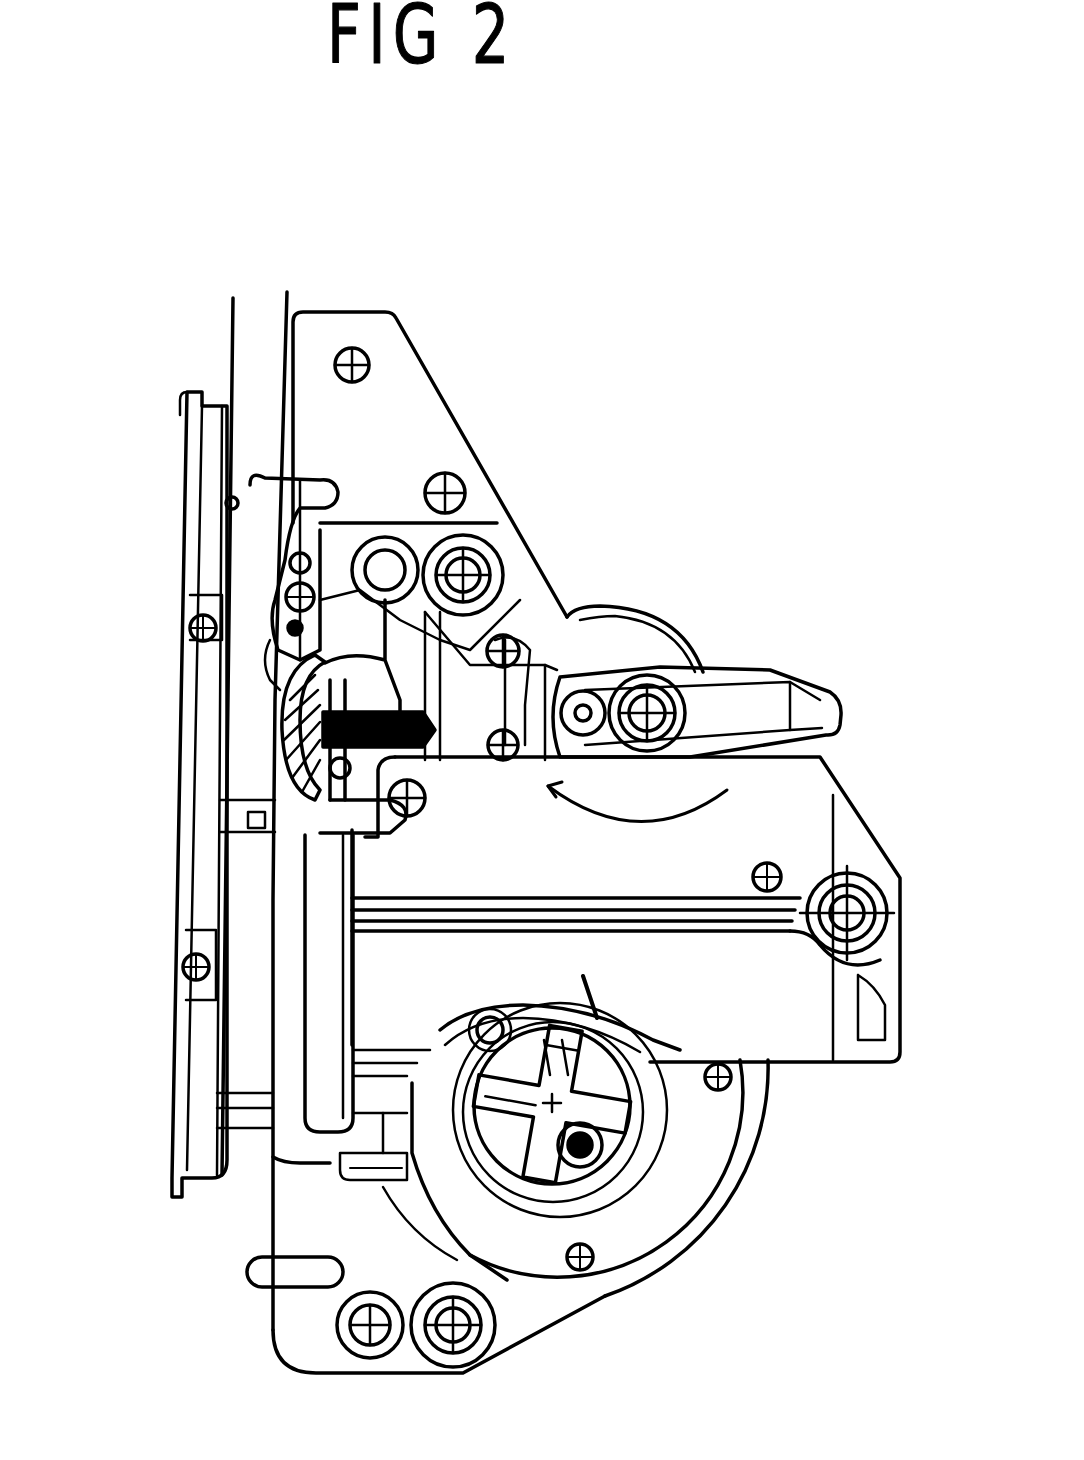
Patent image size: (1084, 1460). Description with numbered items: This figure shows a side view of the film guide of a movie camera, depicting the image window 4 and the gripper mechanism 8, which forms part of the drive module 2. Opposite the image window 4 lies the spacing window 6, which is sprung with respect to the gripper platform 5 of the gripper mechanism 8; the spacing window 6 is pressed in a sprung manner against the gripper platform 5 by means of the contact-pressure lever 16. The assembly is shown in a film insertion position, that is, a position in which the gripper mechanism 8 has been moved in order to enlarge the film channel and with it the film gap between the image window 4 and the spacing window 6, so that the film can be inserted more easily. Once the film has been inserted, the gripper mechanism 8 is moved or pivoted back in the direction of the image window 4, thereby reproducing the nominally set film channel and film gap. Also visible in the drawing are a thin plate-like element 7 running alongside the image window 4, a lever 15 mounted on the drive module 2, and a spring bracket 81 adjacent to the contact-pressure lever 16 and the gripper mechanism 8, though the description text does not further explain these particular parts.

The drive module 2 is at (863, 813).
The image window 4 is at (183, 662).
The gripper platform 5 is at (283, 992).
The spacing window 6 is at (395, 592).
The guide plate 7 is at (250, 378).
The gripper mechanism 8 is at (658, 1212).
The lever 15 is at (700, 703).
The contact-pressure lever 16 is at (457, 555).
The spring bracket 81 is at (453, 660).